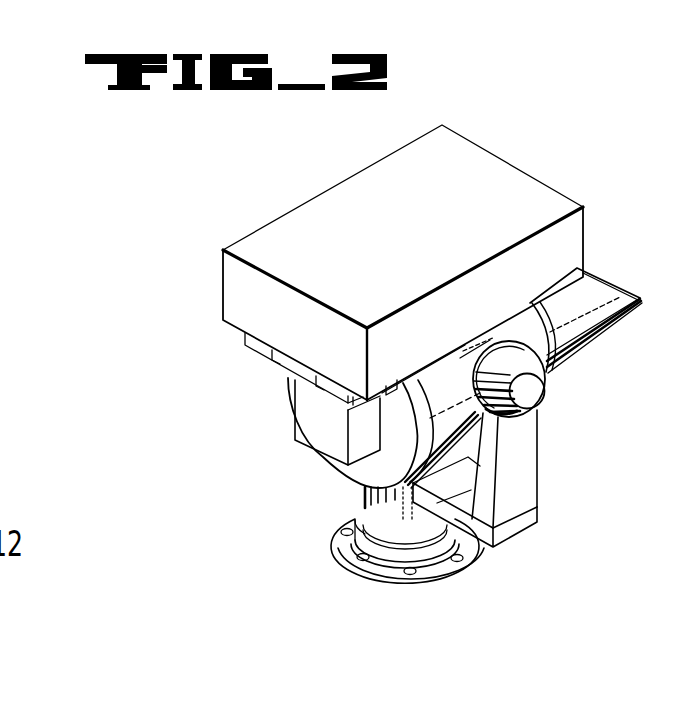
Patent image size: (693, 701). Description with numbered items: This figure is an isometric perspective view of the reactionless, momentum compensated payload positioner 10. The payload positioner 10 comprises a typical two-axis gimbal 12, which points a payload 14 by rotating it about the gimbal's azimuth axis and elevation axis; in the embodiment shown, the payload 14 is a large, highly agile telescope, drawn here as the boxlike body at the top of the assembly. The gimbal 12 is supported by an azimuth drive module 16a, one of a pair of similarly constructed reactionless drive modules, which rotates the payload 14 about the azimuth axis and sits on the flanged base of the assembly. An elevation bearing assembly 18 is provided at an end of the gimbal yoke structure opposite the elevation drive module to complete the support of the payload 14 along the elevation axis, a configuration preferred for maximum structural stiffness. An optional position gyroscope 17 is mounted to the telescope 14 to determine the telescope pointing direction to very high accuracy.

The payload positioner 10 is at (538, 168).
The 2-axis gimbal 12 is at (546, 492).
The payload 14 is at (580, 355).
The azimuth drive module 16a is at (350, 523).
The position gyroscope 17 is at (318, 429).
The elevation bearing assembly 18 is at (530, 393).